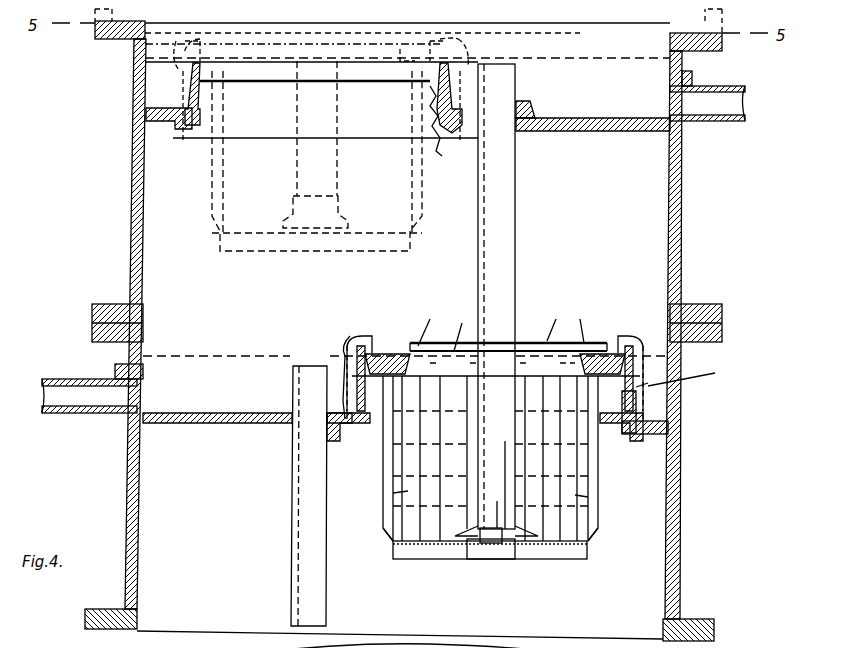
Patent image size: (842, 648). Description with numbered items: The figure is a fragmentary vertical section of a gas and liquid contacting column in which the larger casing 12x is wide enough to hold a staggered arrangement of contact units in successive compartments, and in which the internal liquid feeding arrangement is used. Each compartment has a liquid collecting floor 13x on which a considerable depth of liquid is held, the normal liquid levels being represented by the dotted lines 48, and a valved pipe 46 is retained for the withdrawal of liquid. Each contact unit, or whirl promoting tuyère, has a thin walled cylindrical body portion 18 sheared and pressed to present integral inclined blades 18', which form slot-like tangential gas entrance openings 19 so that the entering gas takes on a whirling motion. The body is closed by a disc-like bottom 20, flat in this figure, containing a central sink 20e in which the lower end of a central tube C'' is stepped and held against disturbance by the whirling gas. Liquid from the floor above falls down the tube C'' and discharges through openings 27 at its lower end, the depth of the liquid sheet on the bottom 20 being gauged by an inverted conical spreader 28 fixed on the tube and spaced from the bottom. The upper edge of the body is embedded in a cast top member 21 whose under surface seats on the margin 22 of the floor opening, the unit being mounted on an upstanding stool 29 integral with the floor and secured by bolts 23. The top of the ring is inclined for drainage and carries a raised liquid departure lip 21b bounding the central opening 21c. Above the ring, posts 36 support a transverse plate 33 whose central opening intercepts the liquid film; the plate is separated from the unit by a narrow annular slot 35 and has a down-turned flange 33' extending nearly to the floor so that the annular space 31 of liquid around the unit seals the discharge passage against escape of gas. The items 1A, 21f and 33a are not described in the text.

The casing 12x is at (134, 190).
The floor 13x is at (578, 118).
The margin 22 is at (145, 57).
The normal liquid levels 48 is at (606, 52).
The valved pipe 46 is at (731, 97).
The central tube C'' is at (418, 345).
The stool 29 is at (200, 100).
The seal 1A is at (330, 345).
The top member 21 is at (600, 340).
The liquid departure lip 21b is at (436, 322).
The central opening 21c is at (454, 364).
The sleeve part 21f is at (547, 364).
The annular slot 35 is at (464, 328).
The annular space 31 is at (554, 322).
The plate 33 is at (459, 345).
The down-turned flange 33' is at (654, 384).
The flange 33a is at (692, 372).
The bolts 23 is at (363, 336).
The posts 36 is at (392, 352).
The tangential gas entrance openings 19 is at (386, 462).
The body portion 18 is at (486, 542).
The blades 18' is at (490, 491).
The bottom 20 is at (423, 558).
The central sink 20e is at (497, 558).
The inverted conical spreader 28 is at (508, 530).
The openings 27 is at (524, 484).